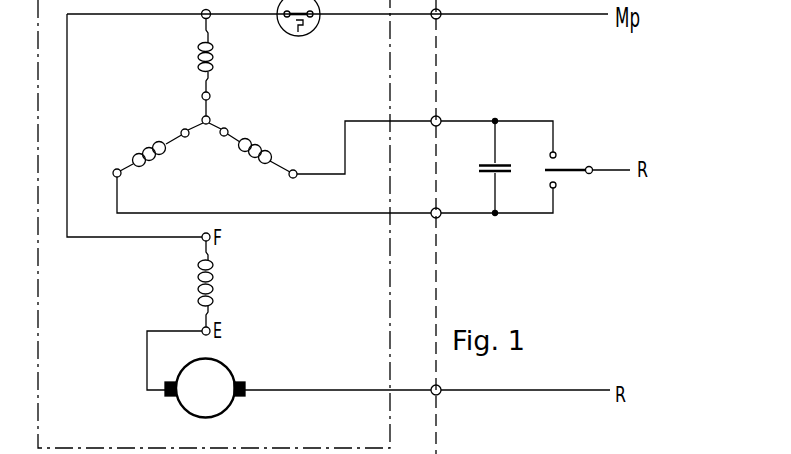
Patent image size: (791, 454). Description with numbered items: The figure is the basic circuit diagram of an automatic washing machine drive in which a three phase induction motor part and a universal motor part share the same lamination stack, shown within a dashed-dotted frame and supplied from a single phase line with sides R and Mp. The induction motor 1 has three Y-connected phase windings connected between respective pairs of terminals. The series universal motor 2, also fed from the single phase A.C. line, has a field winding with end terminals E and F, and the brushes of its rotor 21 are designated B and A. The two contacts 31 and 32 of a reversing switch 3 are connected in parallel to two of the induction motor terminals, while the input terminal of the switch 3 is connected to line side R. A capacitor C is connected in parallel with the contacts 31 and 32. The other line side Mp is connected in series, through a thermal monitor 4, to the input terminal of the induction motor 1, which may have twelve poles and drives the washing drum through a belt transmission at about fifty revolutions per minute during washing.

The induction motor 1 is at (238, 181).
The series universal motor 2 is at (257, 370).
The rotor 21 is at (204, 418).
The reversing switch 3 is at (572, 172).
The contact 31 is at (555, 153).
The contact 32 is at (555, 187).
The thermal monitor 4 is at (303, 34).
The capacitor C is at (492, 177).